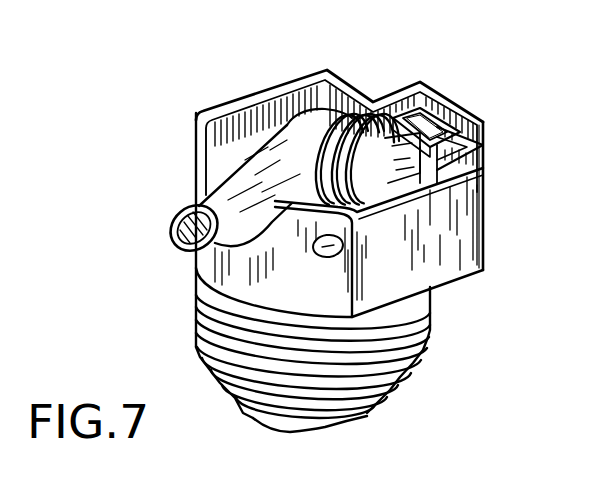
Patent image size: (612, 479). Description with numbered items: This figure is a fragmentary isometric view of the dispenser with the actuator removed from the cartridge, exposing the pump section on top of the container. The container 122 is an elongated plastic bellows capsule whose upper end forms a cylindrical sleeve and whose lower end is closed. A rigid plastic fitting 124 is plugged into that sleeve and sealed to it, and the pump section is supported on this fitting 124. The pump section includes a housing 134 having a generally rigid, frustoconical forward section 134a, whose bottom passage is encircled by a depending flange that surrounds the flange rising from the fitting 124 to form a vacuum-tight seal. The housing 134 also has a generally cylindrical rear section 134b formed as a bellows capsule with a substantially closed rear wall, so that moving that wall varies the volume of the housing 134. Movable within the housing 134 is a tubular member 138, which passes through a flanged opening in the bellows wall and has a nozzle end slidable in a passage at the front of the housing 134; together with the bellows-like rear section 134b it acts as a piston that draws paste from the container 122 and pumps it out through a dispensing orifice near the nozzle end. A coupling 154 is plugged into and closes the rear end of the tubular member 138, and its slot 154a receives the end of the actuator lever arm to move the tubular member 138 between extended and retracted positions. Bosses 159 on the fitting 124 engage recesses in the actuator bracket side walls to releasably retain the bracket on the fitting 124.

The container 122 is at (425, 355).
The fitting 124 is at (468, 230).
The housing 134 is at (290, 122).
The forward section 134a is at (253, 148).
The rear section 134b is at (313, 80).
The tubular member 138 is at (310, 158).
The coupling 154 is at (485, 147).
The slot 154a is at (433, 120).
The bosses 159 is at (324, 258).